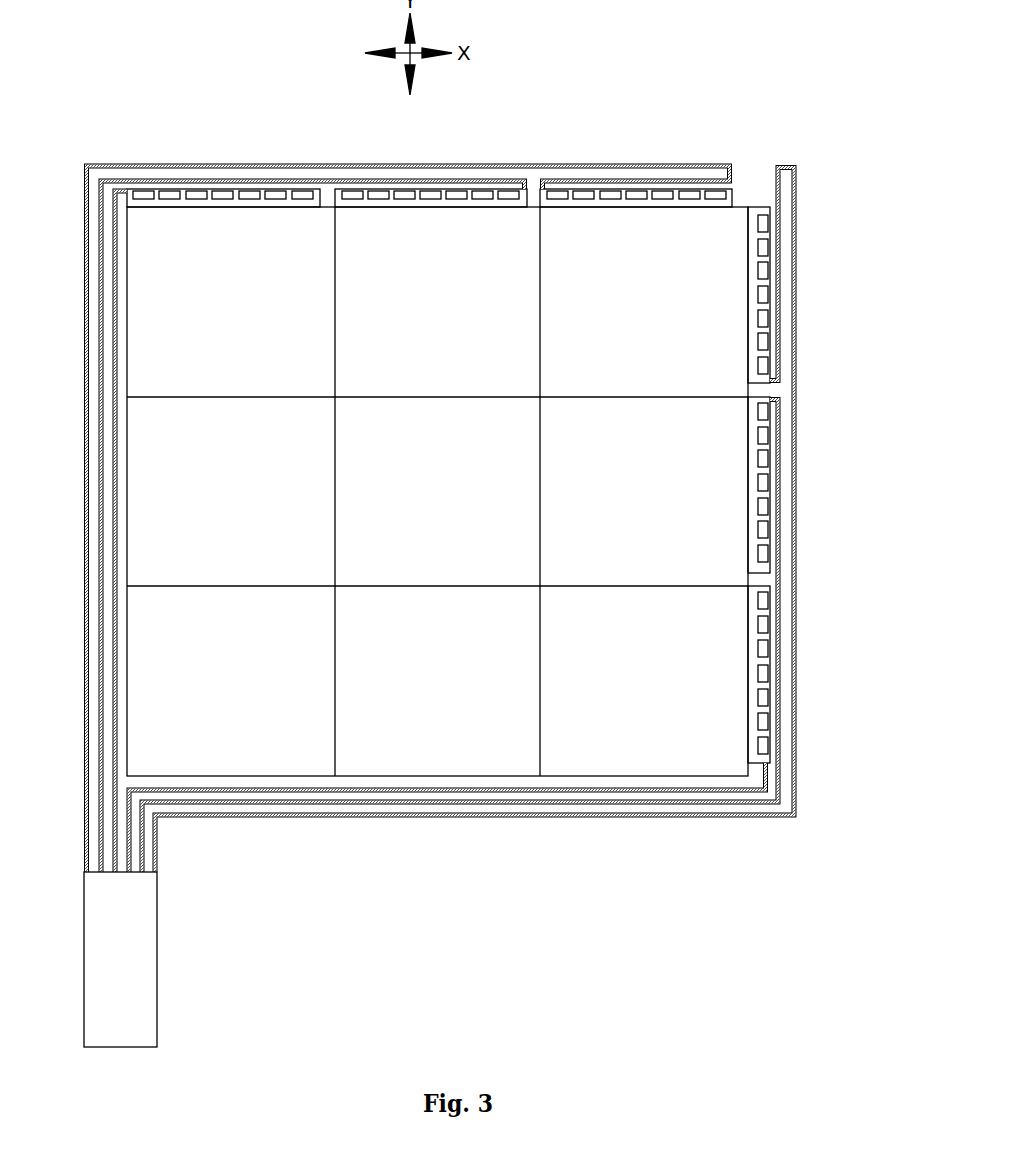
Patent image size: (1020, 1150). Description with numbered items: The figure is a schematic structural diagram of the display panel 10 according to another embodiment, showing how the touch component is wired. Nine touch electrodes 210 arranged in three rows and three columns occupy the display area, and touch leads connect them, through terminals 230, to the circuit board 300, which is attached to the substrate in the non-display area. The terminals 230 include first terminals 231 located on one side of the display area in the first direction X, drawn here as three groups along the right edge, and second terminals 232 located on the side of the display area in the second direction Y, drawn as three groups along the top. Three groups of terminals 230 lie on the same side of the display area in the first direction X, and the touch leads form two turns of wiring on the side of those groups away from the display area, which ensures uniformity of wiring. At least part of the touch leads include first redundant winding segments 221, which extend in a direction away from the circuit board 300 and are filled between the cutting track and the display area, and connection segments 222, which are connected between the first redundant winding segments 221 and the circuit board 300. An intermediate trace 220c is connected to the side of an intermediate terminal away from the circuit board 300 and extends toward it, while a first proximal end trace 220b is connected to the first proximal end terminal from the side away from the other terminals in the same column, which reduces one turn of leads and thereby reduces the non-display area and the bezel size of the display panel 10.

The display panel 10 is at (269, 62).
The touch electrodes 210 is at (140, 313).
The first proximal end trace 220b is at (115, 240).
The intermediate trace 220c is at (400, 180).
The first redundant winding segment 221 is at (635, 180).
The connection segment 222 is at (471, 165).
The terminals 230 is at (662, 59).
The first terminals 231 is at (762, 356).
The second terminals 232 is at (617, 205).
The circuit board 300 is at (140, 940).